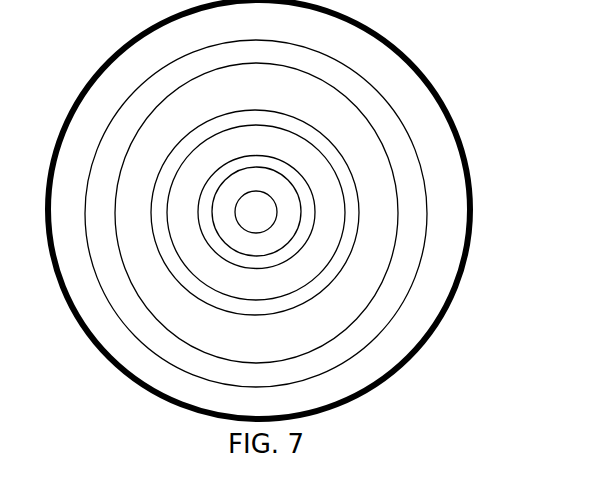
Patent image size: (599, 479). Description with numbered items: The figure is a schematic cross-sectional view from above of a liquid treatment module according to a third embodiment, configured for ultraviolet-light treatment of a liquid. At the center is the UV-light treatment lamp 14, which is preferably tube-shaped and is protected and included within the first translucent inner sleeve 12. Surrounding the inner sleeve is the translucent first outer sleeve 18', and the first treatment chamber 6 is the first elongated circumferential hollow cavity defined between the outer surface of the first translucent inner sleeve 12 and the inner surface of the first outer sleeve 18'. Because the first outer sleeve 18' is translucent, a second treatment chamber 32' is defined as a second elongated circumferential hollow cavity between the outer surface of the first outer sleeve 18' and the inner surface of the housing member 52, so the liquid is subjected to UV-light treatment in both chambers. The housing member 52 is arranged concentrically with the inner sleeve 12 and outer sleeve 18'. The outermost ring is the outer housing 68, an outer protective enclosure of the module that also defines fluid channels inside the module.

The outer housing 68 is at (445, 104).
The housing member 52 is at (412, 223).
The second treatment chamber 32' is at (256, 213).
The first outer sleeve 18' is at (274, 212).
The first treatment chamber 6 is at (256, 212).
The first translucent inner sleeve 12 is at (317, 203).
The UV-light treatment lamp 14 is at (256, 212).